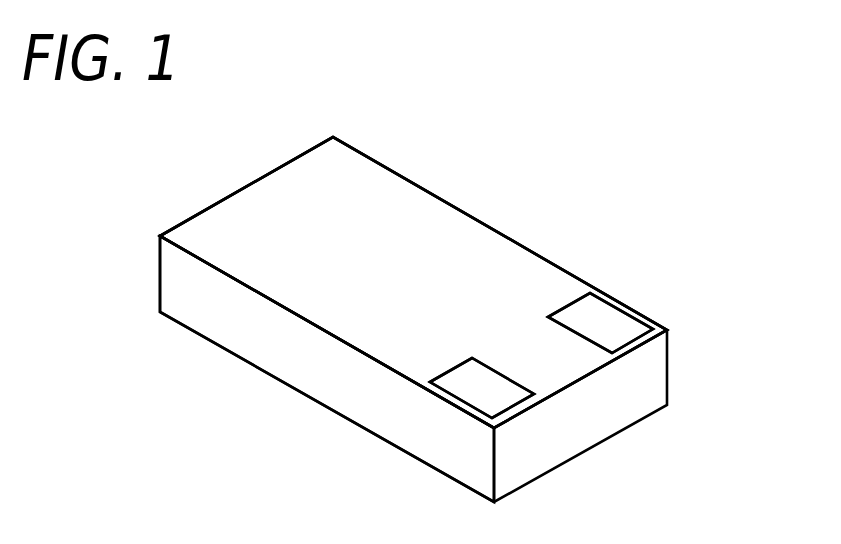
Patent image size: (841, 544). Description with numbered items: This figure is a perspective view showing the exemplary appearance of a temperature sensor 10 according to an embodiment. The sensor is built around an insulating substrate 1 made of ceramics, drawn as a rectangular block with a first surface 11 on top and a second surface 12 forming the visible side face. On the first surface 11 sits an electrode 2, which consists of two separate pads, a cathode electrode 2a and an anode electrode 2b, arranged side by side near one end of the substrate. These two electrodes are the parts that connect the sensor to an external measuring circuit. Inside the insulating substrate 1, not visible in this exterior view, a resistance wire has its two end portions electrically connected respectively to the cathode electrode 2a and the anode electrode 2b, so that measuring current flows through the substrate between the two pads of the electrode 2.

The temperature sensor 10 is at (151, 142).
The insulating substrate 1 is at (505, 260).
The first surface 11 is at (398, 262).
The second surface 12 is at (298, 391).
The electrode 2 is at (763, 350).
The cathode electrode 2a is at (607, 327).
The anode electrode 2b is at (485, 390).